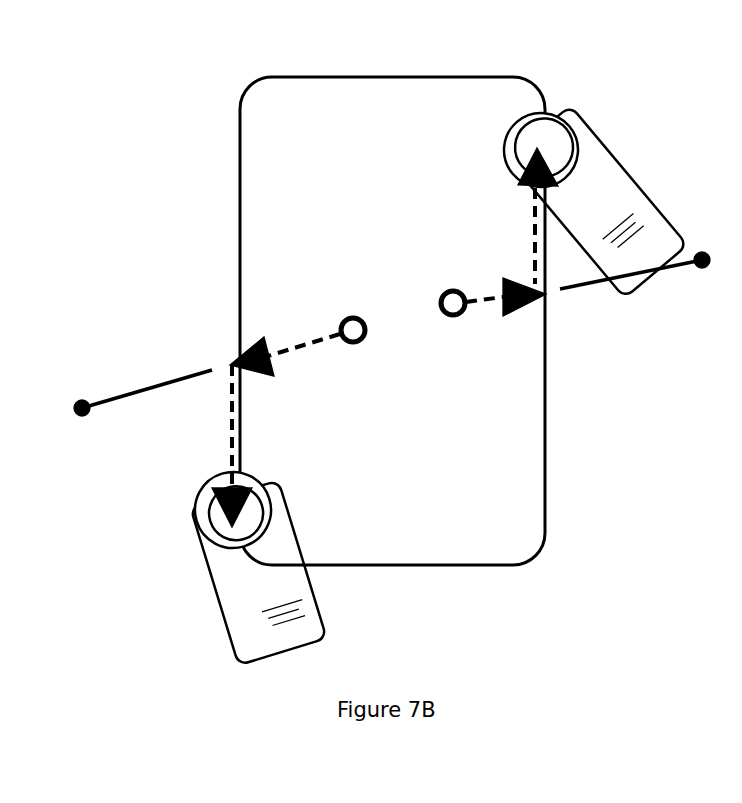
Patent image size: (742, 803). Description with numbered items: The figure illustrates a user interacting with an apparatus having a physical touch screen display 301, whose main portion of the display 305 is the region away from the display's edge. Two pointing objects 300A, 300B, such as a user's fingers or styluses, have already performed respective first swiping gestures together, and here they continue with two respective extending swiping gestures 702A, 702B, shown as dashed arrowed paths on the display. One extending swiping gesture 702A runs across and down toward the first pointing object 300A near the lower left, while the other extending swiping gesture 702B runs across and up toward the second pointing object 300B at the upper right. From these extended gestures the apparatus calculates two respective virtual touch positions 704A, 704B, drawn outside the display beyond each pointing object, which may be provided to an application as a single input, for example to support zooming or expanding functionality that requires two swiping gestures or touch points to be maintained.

The physical touch screen display 301 is at (392, 301).
The main portion of the display 305 is at (333, 176).
The pointing object 300A is at (255, 561).
The pointing object 300B is at (588, 195).
The extending swiping gesture 702A is at (308, 422).
The extending swiping gesture 702B is at (485, 232).
The virtual touch position 704A is at (143, 371).
The virtual touch position 704B is at (635, 307).